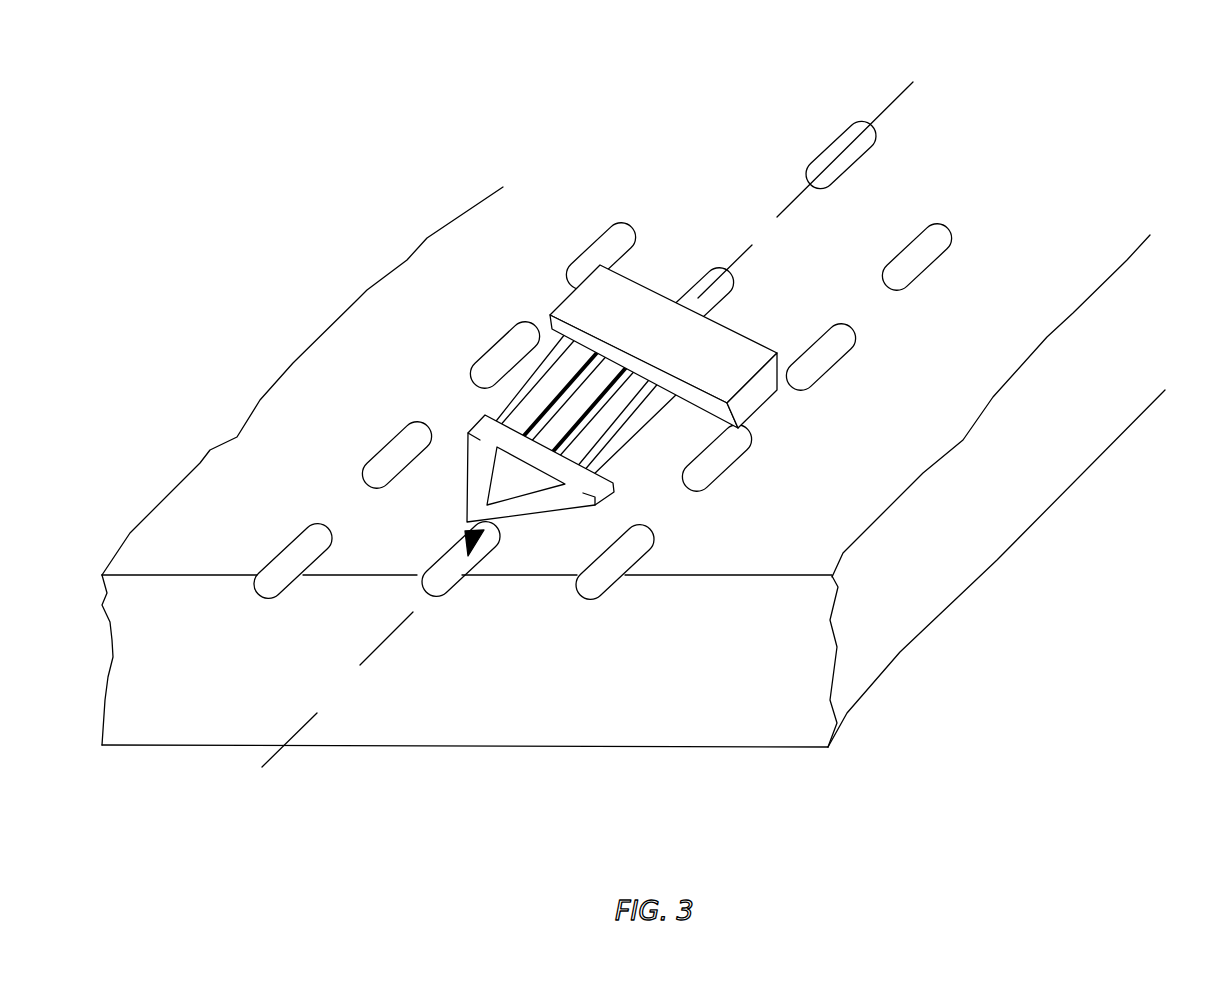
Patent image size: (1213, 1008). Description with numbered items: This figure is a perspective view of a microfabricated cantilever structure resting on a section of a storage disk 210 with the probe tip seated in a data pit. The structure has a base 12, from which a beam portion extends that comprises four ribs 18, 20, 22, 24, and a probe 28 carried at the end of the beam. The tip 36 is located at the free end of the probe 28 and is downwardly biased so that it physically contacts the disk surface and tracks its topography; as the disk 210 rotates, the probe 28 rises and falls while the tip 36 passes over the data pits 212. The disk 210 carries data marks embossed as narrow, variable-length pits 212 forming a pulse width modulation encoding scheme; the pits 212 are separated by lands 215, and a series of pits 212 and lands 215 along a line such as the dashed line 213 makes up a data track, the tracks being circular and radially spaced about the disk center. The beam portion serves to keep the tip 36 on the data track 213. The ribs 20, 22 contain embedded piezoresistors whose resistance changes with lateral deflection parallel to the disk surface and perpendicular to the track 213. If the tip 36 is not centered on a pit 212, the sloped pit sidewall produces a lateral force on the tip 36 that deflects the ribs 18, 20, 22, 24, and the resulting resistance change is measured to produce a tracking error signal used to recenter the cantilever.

The base 12 is at (652, 312).
The rib 18 is at (612, 438).
The rib 20 is at (605, 412).
The rib 22 is at (590, 405).
The rib 24 is at (685, 424).
The probe 28 is at (612, 494).
The tip 36 is at (481, 533).
The storage disk 210 is at (722, 713).
The data pits 212 is at (835, 133).
The line (data track) 213 is at (893, 103).
The lands 215 is at (763, 237).